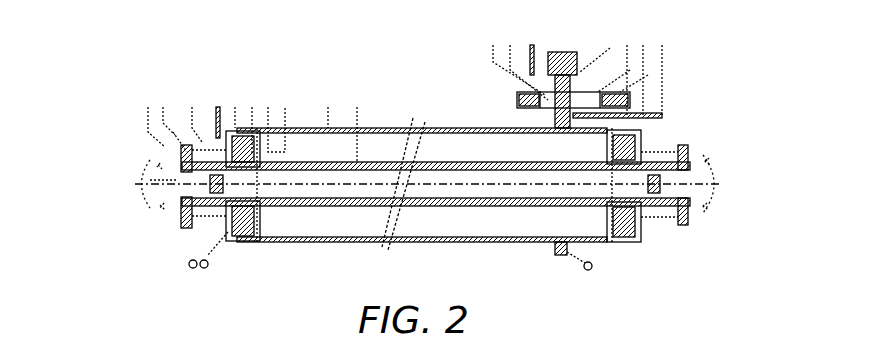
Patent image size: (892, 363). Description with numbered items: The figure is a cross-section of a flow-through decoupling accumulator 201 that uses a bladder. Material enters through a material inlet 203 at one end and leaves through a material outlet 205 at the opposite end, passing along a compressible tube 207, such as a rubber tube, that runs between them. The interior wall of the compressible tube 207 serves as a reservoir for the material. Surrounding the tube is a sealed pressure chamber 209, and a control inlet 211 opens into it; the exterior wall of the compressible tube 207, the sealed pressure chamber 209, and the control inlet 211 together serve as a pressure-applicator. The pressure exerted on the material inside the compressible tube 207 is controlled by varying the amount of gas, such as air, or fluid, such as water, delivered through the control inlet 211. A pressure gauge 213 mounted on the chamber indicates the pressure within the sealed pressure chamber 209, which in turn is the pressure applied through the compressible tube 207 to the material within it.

The decoupling accumulator 201 is at (405, 258).
The material inlet 203 is at (178, 192).
The material outlet 205 is at (685, 182).
The compressible tube 207 is at (518, 160).
The sealed pressure chamber 209 is at (497, 128).
The control inlet 211 is at (558, 253).
The pressure gauge 213 is at (560, 45).